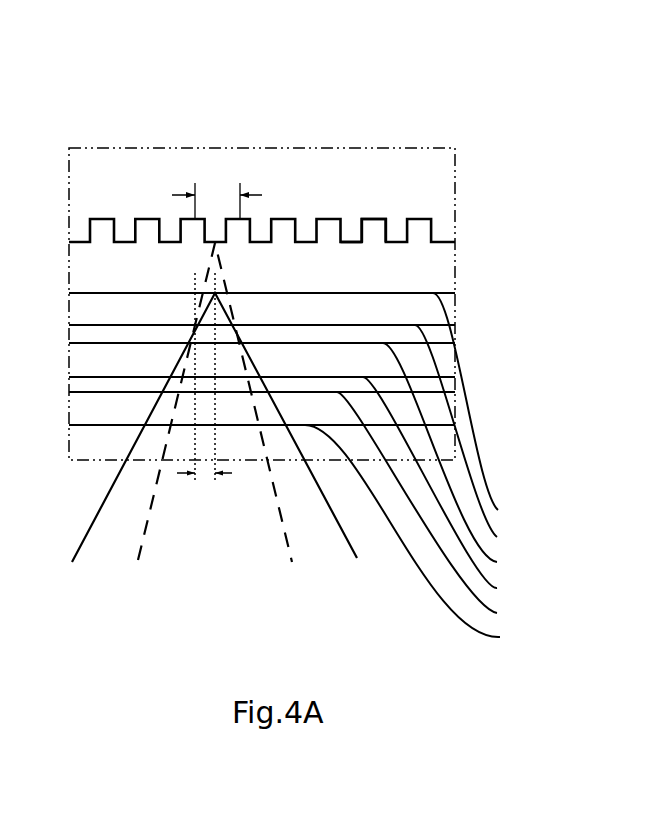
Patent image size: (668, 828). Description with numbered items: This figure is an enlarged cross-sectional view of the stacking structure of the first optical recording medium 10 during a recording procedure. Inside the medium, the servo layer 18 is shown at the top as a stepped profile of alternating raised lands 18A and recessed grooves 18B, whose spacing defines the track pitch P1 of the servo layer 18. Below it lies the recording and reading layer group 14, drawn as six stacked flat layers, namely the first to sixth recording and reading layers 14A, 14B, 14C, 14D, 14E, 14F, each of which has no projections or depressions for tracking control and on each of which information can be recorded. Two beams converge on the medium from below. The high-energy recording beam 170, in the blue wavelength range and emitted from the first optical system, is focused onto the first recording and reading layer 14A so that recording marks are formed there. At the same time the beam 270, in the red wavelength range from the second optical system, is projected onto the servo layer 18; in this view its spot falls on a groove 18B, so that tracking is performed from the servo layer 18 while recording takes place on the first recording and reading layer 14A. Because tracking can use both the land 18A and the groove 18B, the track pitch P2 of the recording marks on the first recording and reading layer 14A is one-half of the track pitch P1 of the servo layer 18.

The first optical recording medium 10 is at (264, 136).
The servo layer 18 is at (552, 72).
The land 18A is at (375, 218).
The groove 18B is at (352, 241).
The track pitch of the servo layer P1 is at (217, 194).
The track pitch of the recording marks P2 is at (213, 475).
The recording and reading layer group 14 is at (348, 473).
The first recording and reading layer 14A is at (315, 409).
The second recording and reading layer 14B is at (314, 438).
The third recording and reading layer 14C is at (314, 460).
The fourth recording and reading layer 14D is at (315, 489).
The fifth recording and reading layer 14E is at (314, 510).
The sixth recording and reading layer 14F is at (572, 500).
The recording beam 170 is at (357, 560).
The beam 270 is at (270, 490).